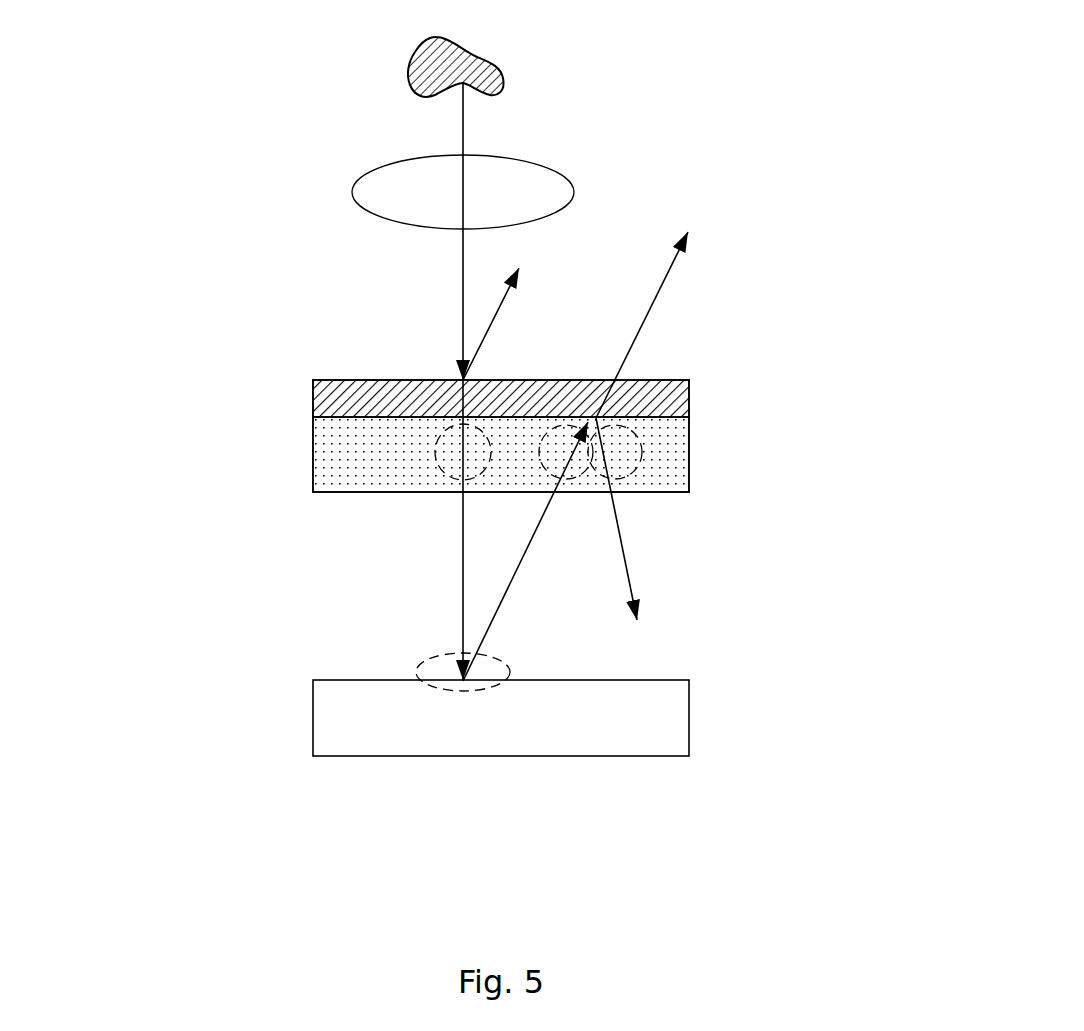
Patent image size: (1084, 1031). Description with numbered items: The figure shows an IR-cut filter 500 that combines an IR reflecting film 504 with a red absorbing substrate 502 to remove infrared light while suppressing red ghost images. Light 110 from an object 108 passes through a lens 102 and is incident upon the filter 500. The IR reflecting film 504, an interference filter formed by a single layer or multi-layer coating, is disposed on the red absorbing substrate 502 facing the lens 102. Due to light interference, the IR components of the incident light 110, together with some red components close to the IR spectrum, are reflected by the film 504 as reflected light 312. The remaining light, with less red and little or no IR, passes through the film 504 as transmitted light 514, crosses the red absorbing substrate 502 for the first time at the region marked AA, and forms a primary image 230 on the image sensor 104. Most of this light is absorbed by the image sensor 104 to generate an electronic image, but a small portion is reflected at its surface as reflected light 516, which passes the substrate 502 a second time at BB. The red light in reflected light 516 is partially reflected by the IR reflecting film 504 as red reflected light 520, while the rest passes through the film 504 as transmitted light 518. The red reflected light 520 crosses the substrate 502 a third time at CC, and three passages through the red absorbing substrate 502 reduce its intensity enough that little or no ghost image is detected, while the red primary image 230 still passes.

The object 108 is at (497, 68).
The lens 102 is at (463, 192).
The light 110 is at (462, 331).
The reflected light 312 is at (492, 322).
The IR-cut filter 500 is at (690, 455).
The IR reflecting film 504 is at (313, 399).
The red absorbing substrate 502 is at (313, 455).
The transmitted light 514 is at (462, 628).
The reflected light 516 is at (520, 565).
The transmitted light 518 is at (640, 331).
The red reflected light 520 is at (627, 565).
The image sensor 104 is at (501, 718).
The primary image 230 is at (483, 687).